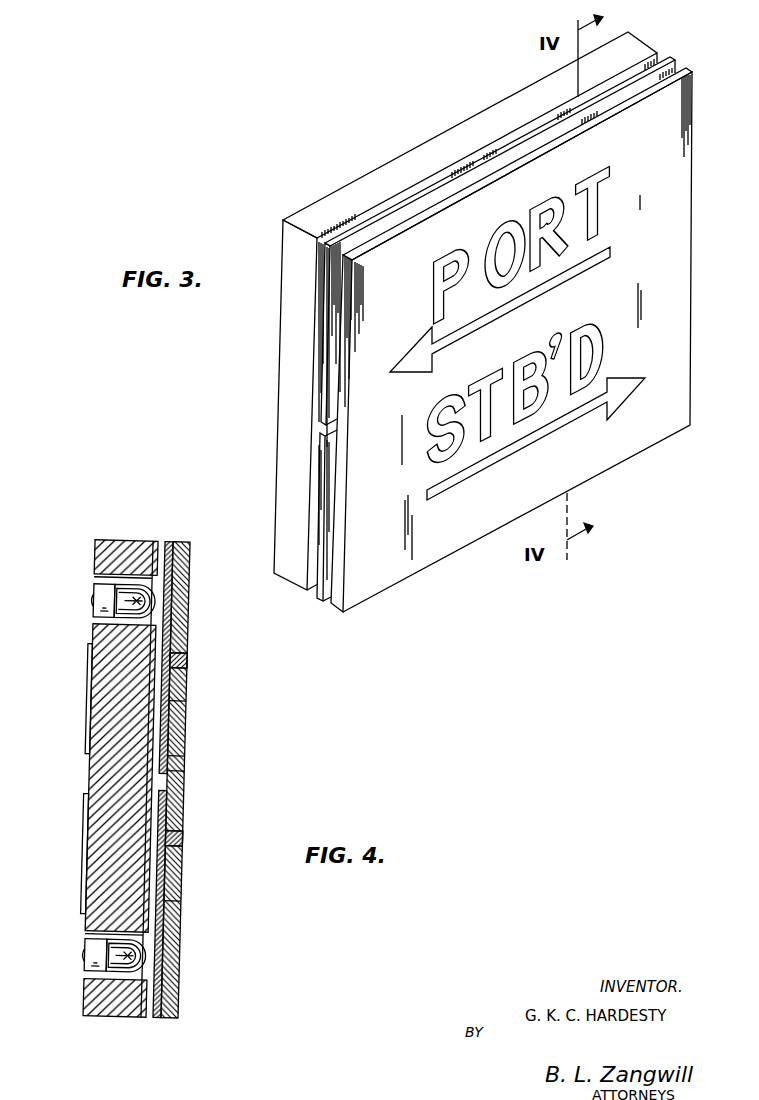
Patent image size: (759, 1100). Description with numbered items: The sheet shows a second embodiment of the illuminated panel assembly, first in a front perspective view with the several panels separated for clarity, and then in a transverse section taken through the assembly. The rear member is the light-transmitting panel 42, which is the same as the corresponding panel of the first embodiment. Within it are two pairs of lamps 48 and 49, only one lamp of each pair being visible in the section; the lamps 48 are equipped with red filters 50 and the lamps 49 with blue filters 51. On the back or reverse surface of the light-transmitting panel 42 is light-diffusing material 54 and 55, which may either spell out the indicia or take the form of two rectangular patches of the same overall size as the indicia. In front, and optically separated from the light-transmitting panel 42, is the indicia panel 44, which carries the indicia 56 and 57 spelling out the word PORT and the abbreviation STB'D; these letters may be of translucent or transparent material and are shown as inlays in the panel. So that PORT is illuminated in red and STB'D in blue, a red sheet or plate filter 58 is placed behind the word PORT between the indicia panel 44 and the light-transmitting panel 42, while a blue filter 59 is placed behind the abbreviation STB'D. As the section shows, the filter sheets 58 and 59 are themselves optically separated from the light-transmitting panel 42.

In FIG. 3, the light-transmitting panel 42 is at (383, 170).
In FIG. 4, the light-transmitting panel 42 is at (103, 774).
In FIG. 3, the indicia panel 44 is at (625, 450).
In FIG. 4, the indicia panel 44 is at (184, 783).
In FIG. 4, the lamp 48 is at (98, 588).
In FIG. 4, the lamp 49 is at (88, 944).
In FIG. 4, the red filter 50 is at (133, 598).
In FIG. 4, the blue filter 51 is at (130, 975).
In FIG. 4, the light-diffusing material 54 is at (88, 680).
In FIG. 4, the light-diffusing material 55 is at (82, 862).
In FIG. 3, the indicia 56 is at (434, 296).
In FIG. 4, the indicia 56 is at (185, 659).
In FIG. 3, the indicia 57 is at (604, 358).
In FIG. 4, the indicia 57 is at (182, 839).
In FIG. 3, the red sheet or plate filter 58 is at (328, 313).
In FIG. 4, the red sheet or plate filter 58 is at (178, 608).
In FIG. 3, the blue filter 59 is at (328, 468).
In FIG. 4, the blue filter 59 is at (175, 960).